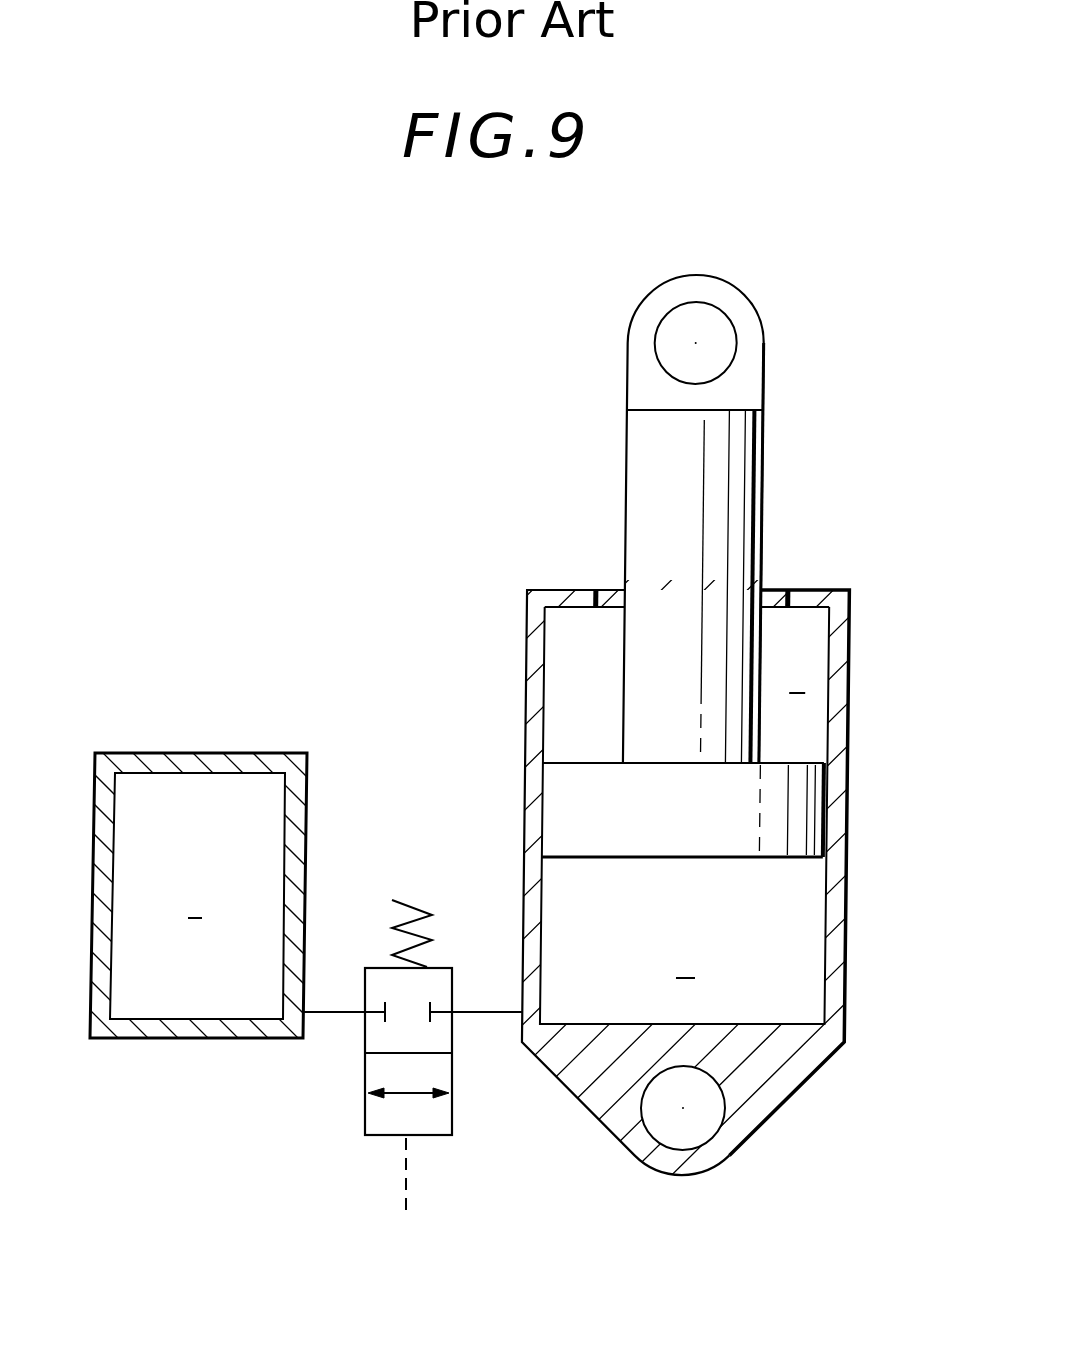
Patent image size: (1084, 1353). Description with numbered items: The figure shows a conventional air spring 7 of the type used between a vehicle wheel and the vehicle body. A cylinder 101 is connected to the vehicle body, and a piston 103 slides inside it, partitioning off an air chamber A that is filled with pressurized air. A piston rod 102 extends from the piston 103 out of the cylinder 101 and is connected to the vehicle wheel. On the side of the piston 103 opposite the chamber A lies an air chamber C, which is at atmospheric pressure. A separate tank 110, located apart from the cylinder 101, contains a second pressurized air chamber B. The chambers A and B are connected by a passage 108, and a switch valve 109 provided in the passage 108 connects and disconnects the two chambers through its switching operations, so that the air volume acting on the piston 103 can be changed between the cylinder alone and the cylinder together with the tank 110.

The hydraulic cylinder 7 is at (542, 737).
The cylinder 101 is at (835, 932).
The piston rod 102 is at (752, 543).
The piston 103 is at (638, 828).
The passage 108 is at (492, 1013).
The switch valve 109 is at (363, 1113).
The tank 110 is at (213, 762).